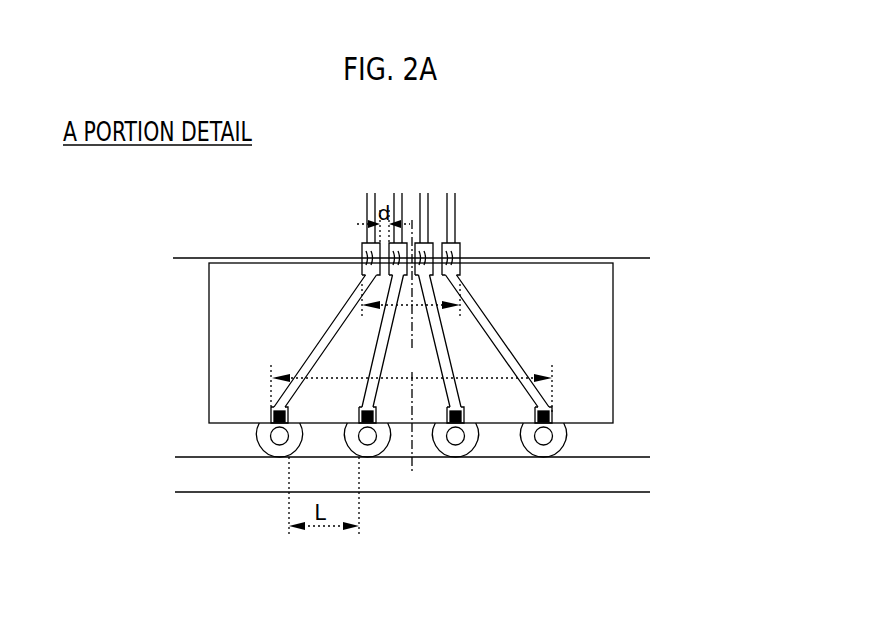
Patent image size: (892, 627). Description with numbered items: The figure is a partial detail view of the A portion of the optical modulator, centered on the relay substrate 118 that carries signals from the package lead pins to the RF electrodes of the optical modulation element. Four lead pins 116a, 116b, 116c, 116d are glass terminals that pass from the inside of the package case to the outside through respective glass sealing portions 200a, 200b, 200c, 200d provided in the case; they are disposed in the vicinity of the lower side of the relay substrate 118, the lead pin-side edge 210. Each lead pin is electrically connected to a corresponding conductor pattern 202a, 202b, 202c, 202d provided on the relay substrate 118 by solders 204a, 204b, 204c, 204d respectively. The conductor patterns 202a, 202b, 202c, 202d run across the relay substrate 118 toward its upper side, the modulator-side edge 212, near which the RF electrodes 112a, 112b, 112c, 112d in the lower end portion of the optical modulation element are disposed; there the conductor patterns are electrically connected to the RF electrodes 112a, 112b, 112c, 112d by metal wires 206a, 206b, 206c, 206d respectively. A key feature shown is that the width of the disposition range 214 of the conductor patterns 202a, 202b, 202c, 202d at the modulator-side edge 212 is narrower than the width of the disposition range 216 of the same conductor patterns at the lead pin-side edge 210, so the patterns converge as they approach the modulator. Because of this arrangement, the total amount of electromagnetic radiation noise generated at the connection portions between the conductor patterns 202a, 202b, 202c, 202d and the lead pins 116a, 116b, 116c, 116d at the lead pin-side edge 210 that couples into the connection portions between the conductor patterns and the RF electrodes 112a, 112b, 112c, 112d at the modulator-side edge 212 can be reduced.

The relay substrate 118 is at (362, 343).
The modulator-side edge 212 is at (415, 225).
The lead pin-side edge 210 is at (441, 471).
The RF electrode 112a is at (500, 199).
The RF electrode 112b is at (453, 183).
The RF electrode 112c is at (366, 182).
The RF electrode 112d is at (316, 201).
The metal wire 206a is at (508, 248).
The metal wire 206b is at (479, 234).
The metal wire 206c is at (330, 235).
The metal wire 206d is at (313, 251).
The conductor pattern 202a is at (520, 341).
The conductor pattern 202b is at (509, 341).
The conductor pattern 202c is at (317, 341).
The conductor pattern 202d is at (306, 341).
The disposition range 216 is at (397, 371).
The disposition range 214 is at (404, 346).
The solder 204a is at (622, 401).
The solder 204b is at (427, 403).
The solder 204c is at (345, 403).
The solder 204d is at (195, 423).
The lead pin 116a is at (584, 511).
The lead pin 116b is at (492, 512).
The lead pin 116c is at (409, 486).
The lead pin 116d is at (206, 458).
The glass sealing portion 200a is at (599, 494).
The glass sealing portion 200b is at (501, 494).
The glass sealing portion 200c is at (378, 504).
The glass sealing portion 200d is at (236, 490).